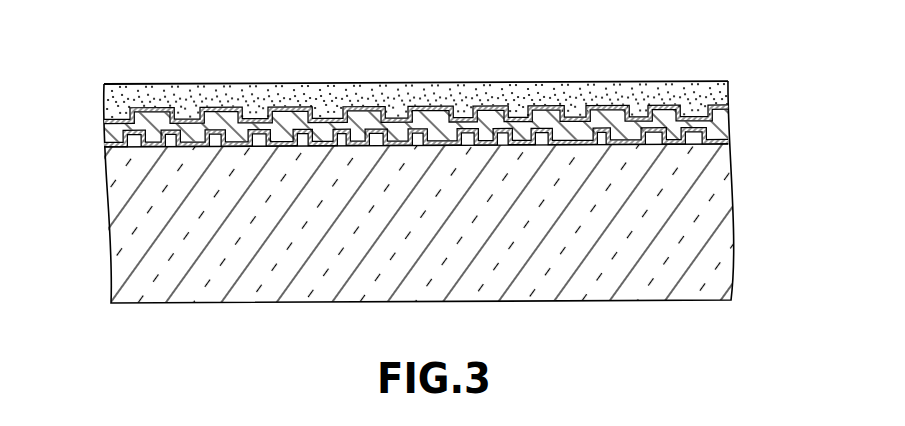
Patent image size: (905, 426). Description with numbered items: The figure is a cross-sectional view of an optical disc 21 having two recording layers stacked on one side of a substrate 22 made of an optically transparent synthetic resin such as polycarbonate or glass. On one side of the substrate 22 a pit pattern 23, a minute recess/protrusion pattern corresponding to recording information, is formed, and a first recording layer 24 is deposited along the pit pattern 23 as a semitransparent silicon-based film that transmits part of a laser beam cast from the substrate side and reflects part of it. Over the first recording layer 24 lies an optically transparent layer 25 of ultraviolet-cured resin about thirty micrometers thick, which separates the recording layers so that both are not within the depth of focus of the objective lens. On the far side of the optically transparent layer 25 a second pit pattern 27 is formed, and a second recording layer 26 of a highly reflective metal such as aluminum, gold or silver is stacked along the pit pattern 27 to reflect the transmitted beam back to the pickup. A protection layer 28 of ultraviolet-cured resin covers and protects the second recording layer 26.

The optical disc 21 is at (752, 41).
The substrate 22 is at (692, 258).
The pit pattern 23 is at (653, 140).
The first recording layer 24 is at (725, 143).
The optically transparent layer 25 is at (729, 133).
The second recording layer 26 is at (731, 112).
The pit pattern 27 is at (714, 105).
The protection layer 28 is at (703, 84).